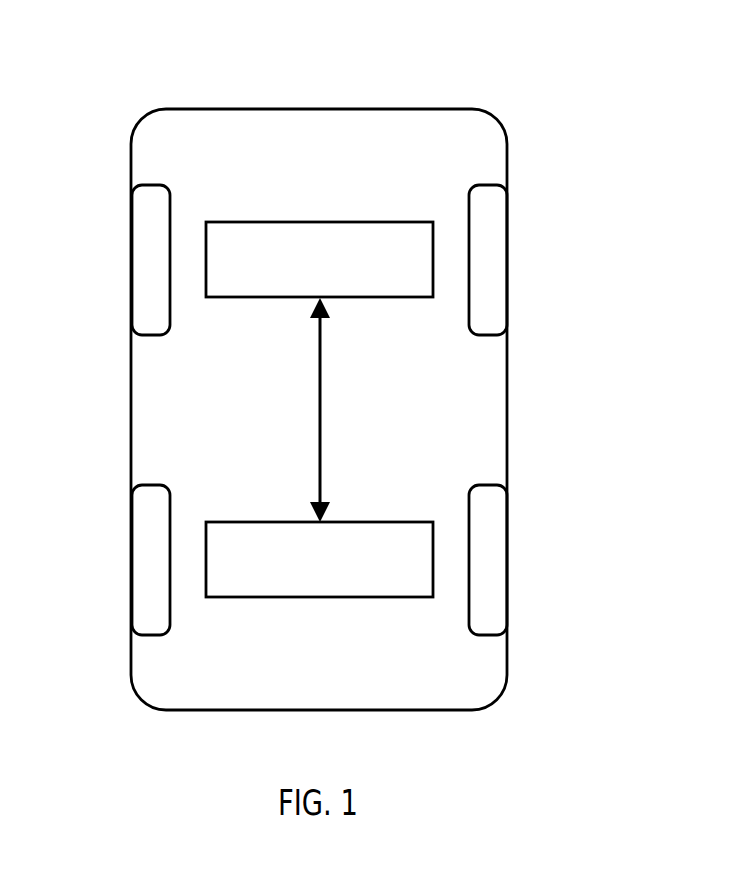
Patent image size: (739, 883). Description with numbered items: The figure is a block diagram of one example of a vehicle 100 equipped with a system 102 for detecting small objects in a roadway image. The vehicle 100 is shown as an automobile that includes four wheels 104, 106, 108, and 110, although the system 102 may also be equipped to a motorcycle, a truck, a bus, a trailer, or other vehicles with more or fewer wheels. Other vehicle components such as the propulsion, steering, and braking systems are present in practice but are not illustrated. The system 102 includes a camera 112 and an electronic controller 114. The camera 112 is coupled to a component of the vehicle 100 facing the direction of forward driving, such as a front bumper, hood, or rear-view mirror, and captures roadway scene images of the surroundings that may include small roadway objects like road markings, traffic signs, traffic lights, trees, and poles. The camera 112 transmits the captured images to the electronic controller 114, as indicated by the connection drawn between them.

The vehicle 100 is at (337, 176).
The system 102 is at (405, 64).
The wheel 104 is at (150, 260).
The wheel 106 is at (150, 560).
The wheel 108 is at (490, 560).
The wheel 110 is at (490, 260).
The camera 112 is at (337, 286).
The electronic controller 114 is at (337, 586).